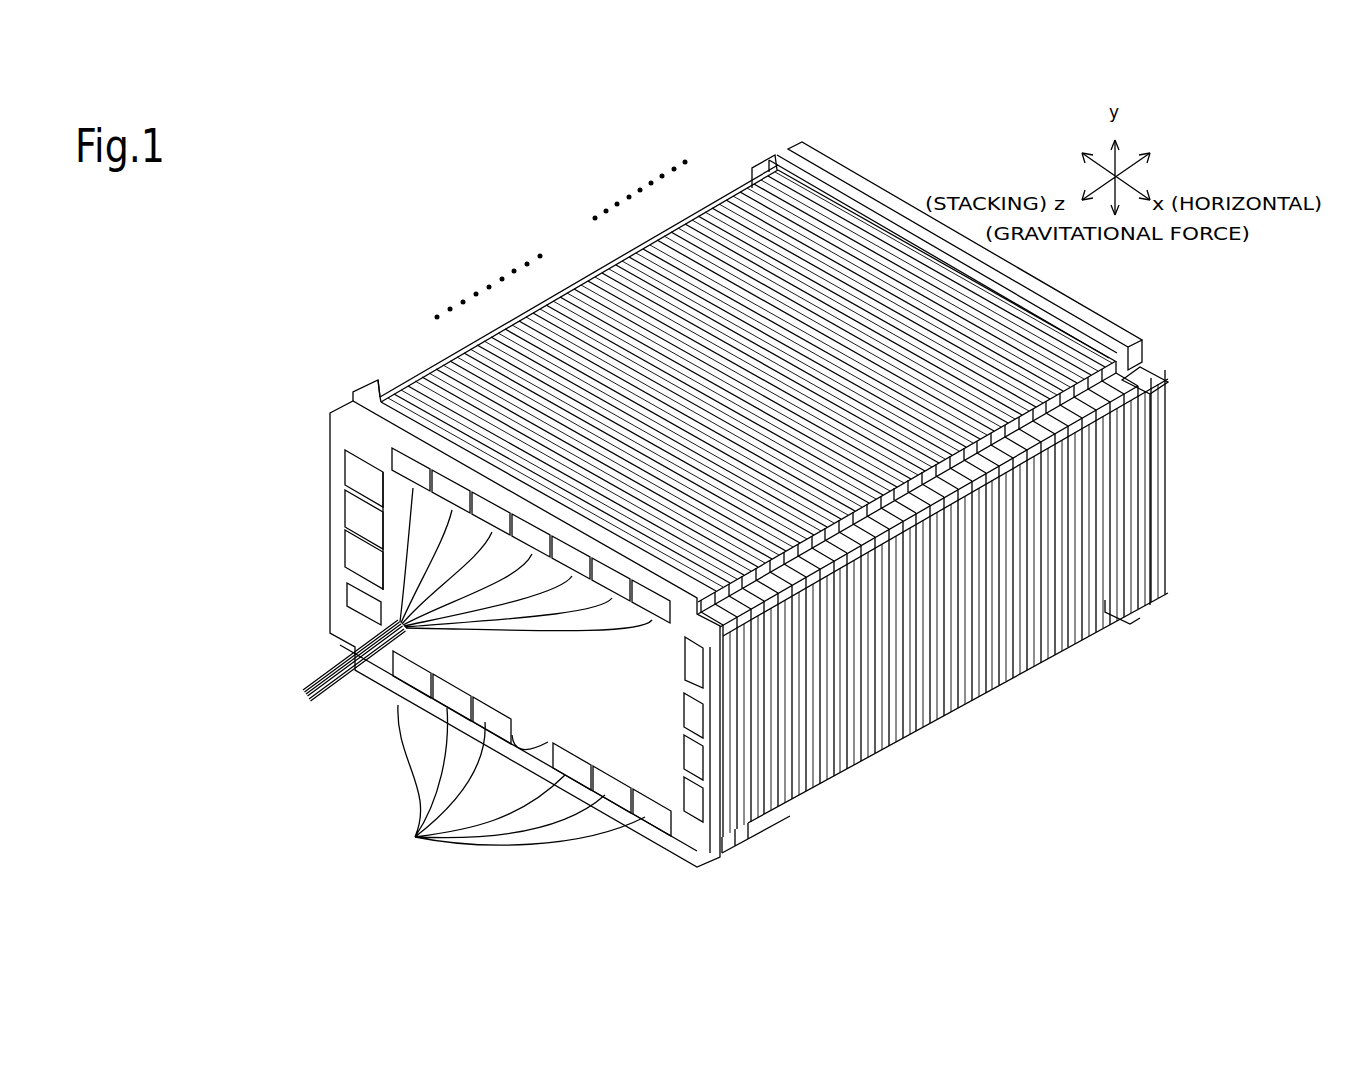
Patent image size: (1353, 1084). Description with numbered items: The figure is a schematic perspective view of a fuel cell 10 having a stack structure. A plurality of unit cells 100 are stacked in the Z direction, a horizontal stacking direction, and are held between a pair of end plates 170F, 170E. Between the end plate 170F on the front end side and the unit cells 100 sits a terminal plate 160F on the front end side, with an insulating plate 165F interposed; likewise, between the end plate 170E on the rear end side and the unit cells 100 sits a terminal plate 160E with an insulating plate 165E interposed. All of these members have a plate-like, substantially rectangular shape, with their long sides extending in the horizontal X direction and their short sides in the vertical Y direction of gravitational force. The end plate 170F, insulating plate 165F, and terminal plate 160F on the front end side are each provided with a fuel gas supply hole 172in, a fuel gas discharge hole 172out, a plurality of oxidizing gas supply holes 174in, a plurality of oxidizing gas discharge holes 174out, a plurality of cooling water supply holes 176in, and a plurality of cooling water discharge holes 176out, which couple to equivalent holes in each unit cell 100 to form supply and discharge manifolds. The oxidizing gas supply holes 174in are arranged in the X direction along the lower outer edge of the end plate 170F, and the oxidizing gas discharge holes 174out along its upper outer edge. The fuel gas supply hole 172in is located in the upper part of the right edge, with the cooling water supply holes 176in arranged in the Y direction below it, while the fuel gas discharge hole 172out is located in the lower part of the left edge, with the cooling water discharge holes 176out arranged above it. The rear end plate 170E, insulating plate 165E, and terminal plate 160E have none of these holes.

The fuel cell 10 is at (325, 151).
The unit cells 100 is at (585, 300).
The terminal plate on the rear end side 160E is at (765, 185).
The terminal plate on the front end side 160F is at (392, 392).
The insulating plate on the rear end side 165E is at (752, 168).
The insulating plate on the front end side 165F is at (370, 397).
The end plate on the rear end side 170E is at (818, 160).
The end plate on the front end side 170F is at (345, 403).
The fuel gas supply hole 172in is at (697, 658).
The fuel gas discharge hole 172out is at (350, 595).
The oxidizing gas supply holes 174in is at (511, 762).
The oxidizing gas discharge holes 174out is at (446, 590).
The cooling water supply holes 176in is at (698, 718).
The cooling water discharge holes 176out is at (355, 546).